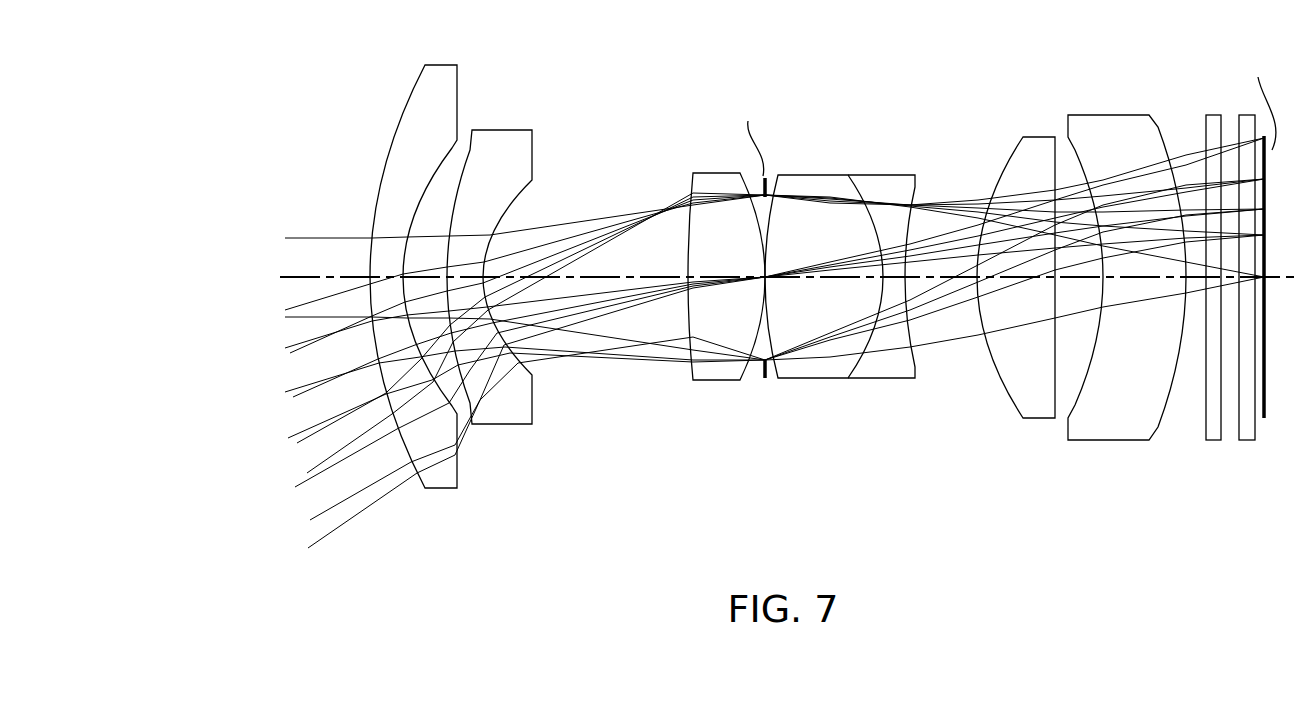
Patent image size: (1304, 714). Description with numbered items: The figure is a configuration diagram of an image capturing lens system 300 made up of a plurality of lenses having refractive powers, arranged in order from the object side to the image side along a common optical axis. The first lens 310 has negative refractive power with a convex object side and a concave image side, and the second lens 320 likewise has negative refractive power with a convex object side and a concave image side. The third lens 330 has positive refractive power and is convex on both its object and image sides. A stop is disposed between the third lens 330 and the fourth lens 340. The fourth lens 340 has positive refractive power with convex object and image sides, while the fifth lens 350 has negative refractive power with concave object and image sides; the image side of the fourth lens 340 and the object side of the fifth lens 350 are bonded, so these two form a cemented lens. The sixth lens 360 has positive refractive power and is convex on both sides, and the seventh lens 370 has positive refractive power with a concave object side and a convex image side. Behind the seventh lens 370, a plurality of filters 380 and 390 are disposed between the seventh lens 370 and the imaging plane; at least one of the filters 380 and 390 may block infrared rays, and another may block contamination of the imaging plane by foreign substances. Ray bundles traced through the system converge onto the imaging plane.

The image capturing lens system 300 is at (891, 97).
The first lens 310 is at (440, 488).
The second lens 320 is at (498, 424).
The third lens 330 is at (713, 380).
The fourth lens 340 is at (807, 380).
The fifth lens 350 is at (893, 380).
The sixth lens 360 is at (1033, 418).
The seventh lens 370 is at (1107, 440).
The filter 380 is at (1212, 440).
The filter 390 is at (1246, 440).